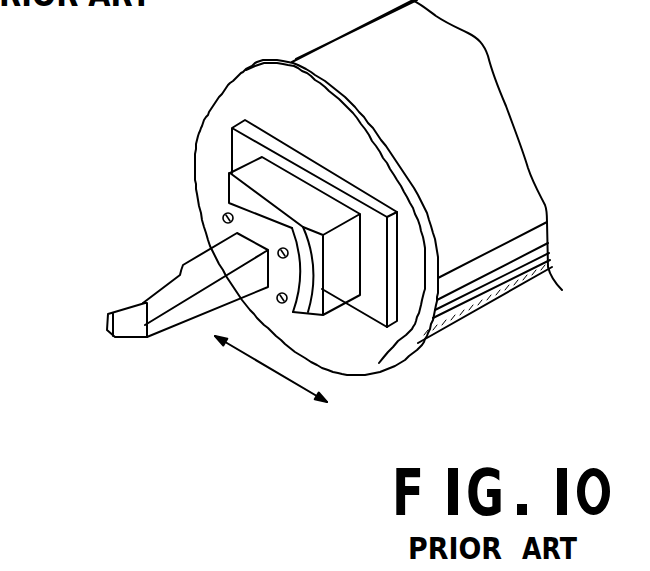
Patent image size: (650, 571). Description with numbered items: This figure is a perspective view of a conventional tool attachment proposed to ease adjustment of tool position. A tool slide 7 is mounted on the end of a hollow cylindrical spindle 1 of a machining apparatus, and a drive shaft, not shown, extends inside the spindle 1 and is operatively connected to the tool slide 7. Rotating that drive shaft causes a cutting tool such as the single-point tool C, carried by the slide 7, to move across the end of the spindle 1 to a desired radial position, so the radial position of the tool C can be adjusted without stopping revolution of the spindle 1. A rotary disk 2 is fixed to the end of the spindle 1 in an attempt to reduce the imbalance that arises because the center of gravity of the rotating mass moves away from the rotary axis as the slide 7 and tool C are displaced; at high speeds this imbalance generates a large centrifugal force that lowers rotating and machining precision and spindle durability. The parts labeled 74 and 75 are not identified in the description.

The hollow cylindrical spindle 1 is at (465, 143).
The rotary disk 2 is at (430, 291).
The tool slide 7 is at (260, 185).
The clamp block 74 is at (221, 237).
The screws 75 is at (213, 220).
The single-point tool C is at (140, 306).